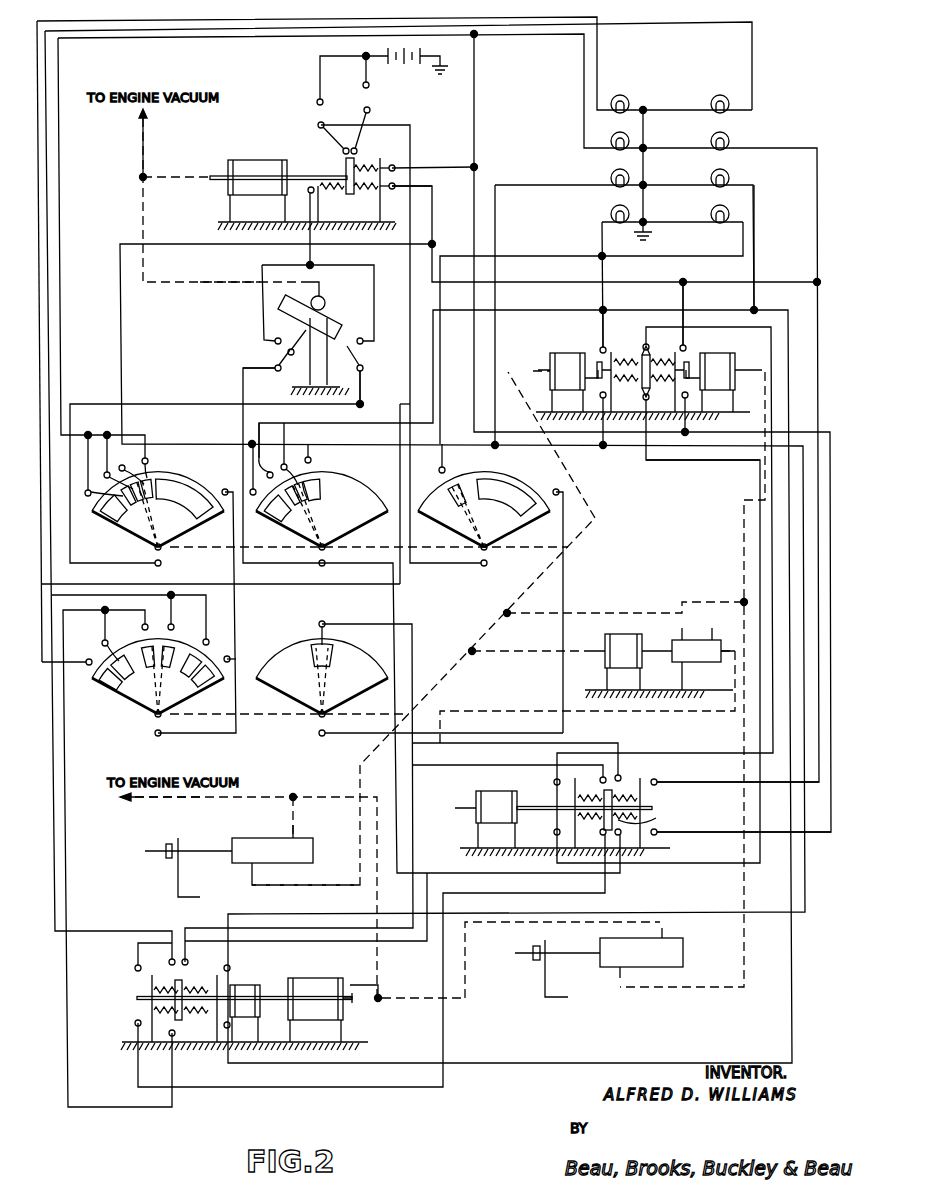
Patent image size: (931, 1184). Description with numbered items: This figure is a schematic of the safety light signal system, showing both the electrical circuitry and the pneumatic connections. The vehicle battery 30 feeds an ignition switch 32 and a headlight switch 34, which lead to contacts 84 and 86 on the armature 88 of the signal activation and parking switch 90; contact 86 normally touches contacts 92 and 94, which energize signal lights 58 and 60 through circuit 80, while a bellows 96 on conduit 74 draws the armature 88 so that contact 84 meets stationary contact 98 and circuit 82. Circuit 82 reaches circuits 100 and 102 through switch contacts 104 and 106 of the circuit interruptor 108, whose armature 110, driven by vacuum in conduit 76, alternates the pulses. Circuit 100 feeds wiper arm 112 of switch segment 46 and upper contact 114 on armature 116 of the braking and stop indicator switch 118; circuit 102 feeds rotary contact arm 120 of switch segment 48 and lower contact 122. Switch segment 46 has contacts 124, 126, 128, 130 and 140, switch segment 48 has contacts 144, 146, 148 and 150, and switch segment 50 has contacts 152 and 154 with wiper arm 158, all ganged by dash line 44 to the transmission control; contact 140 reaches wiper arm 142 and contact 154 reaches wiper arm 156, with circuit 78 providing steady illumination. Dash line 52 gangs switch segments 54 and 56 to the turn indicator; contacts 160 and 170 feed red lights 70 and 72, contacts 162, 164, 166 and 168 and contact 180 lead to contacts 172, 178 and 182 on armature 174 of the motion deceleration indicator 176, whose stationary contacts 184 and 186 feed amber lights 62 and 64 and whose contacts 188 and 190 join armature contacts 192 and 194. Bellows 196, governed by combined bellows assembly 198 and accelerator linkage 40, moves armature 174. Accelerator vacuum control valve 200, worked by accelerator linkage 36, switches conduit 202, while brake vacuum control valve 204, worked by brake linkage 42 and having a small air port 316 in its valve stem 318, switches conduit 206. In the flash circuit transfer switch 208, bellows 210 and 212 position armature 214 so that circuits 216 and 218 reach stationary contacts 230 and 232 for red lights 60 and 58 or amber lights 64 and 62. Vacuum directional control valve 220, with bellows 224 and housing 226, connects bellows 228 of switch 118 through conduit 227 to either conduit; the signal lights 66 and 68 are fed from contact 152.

The vehicle battery 30 is at (422, 41).
The ignition switch 32 is at (315, 108).
The headlight switch 34 is at (370, 93).
The accelerator linkage 36 is at (196, 891).
The accelerator linkage 40 is at (376, 983).
The brake linkage 42 is at (566, 1013).
The dash line 44 is at (210, 568).
The switch segment 46 is at (154, 511).
The switch segment 48 is at (316, 492).
The switch segment 50 is at (492, 510).
The dash line 52 is at (284, 732).
The switch segment 54 is at (168, 668).
The switch segment 56 is at (325, 678).
The signal light 58 is at (612, 140).
The signal light 60 is at (734, 134).
The signal light 62 is at (611, 171).
The signal light 64 is at (734, 173).
The signal light 66 is at (612, 207).
The signal light 68 is at (706, 201).
The signal light 70 is at (626, 98).
The signal light 72 is at (720, 98).
The pneumatic conduit 74 is at (148, 140).
The pneumatic conduit 76 is at (198, 280).
The circuit 78 is at (323, 178).
The circuit 80 is at (434, 175).
The circuit 82 is at (310, 196).
The contact 84 is at (345, 167).
The contact 86 is at (353, 148).
The armature 88 is at (305, 173).
The signal activation and parking switch 90 is at (310, 215).
The contact 92 is at (364, 164).
The contact 94 is at (358, 192).
The bellows 96 is at (260, 157).
The stationary contact 98 is at (333, 202).
The circuit 100 is at (370, 396).
The circuit 102 is at (242, 394).
The switch contact 104 is at (374, 352).
The switch contact 106 is at (274, 359).
The circuit interruptor 108 is at (309, 345).
The armature 110 is at (288, 338).
The wiper arm 112 is at (130, 546).
The upper contact 114 is at (614, 790).
The armature 116 is at (544, 822).
The braking and stop indicator switch 118 is at (571, 808).
The rotary contact arm 120 is at (310, 520).
The lower contact 122 is at (652, 817).
The contact 124 is at (110, 530).
The contact 126 is at (110, 479).
The contact 128 is at (126, 485).
The contact 130 is at (150, 481).
The contact 140 is at (200, 496).
The wiper arm 142 is at (146, 718).
The stationary contact 144 is at (276, 524).
The stationary contact 146 is at (274, 444).
The stationary contact 148 is at (298, 475).
The stationary contact 150 is at (318, 478).
The REVERSE contact 152 is at (474, 476).
The contact 154 is at (520, 498).
The wiper arm 156 is at (326, 688).
The wiper arm 158 is at (478, 526).
The stationary contact 160 is at (104, 690).
The stationary contact 162 is at (118, 657).
The stationary contact 164 is at (146, 648).
The stationary contact 166 is at (168, 646).
The stationary contact 168 is at (200, 662).
The stationary contact 170 is at (210, 672).
The lower contact 172 is at (178, 1020).
The armature 174 is at (136, 999).
The motion deceleration indicator 176 is at (248, 998).
The upper armature contact 178 is at (174, 966).
The stationary contact 180 is at (336, 650).
The armature contact 182 is at (182, 978).
The stationary contact 184 is at (210, 982).
The stationary contact 186 is at (194, 1018).
The stationary contact 188 is at (152, 961).
The stationary contact 190 is at (148, 1020).
The armature contact 192 is at (608, 798).
The armature contact 194 is at (606, 824).
The bellows 196 is at (250, 985).
The combined bellows assembly 198 is at (322, 975).
The accelerator vacuum control valve 200 is at (229, 852).
The conduit 202 is at (340, 900).
The brake vacuum control valve 204 is at (686, 952).
The conduit 206 is at (635, 974).
The flash circuit transfer switch 208 is at (633, 351).
The bellows 210 is at (550, 354).
The bellows 212 is at (730, 360).
The armature 214 is at (688, 360).
The circuit 216 is at (664, 308).
The circuit 218 is at (664, 476).
The vacuum directional control valve 220 is at (659, 684).
The bellows 224 is at (615, 634).
The housing 226 is at (696, 668).
The conduit 227 is at (599, 658).
The bellows 228 is at (500, 786).
The stationary contact 230 is at (636, 358).
The stationary contact 232 is at (626, 381).
The air port 316 is at (516, 954).
The valve stem 318 is at (534, 946).